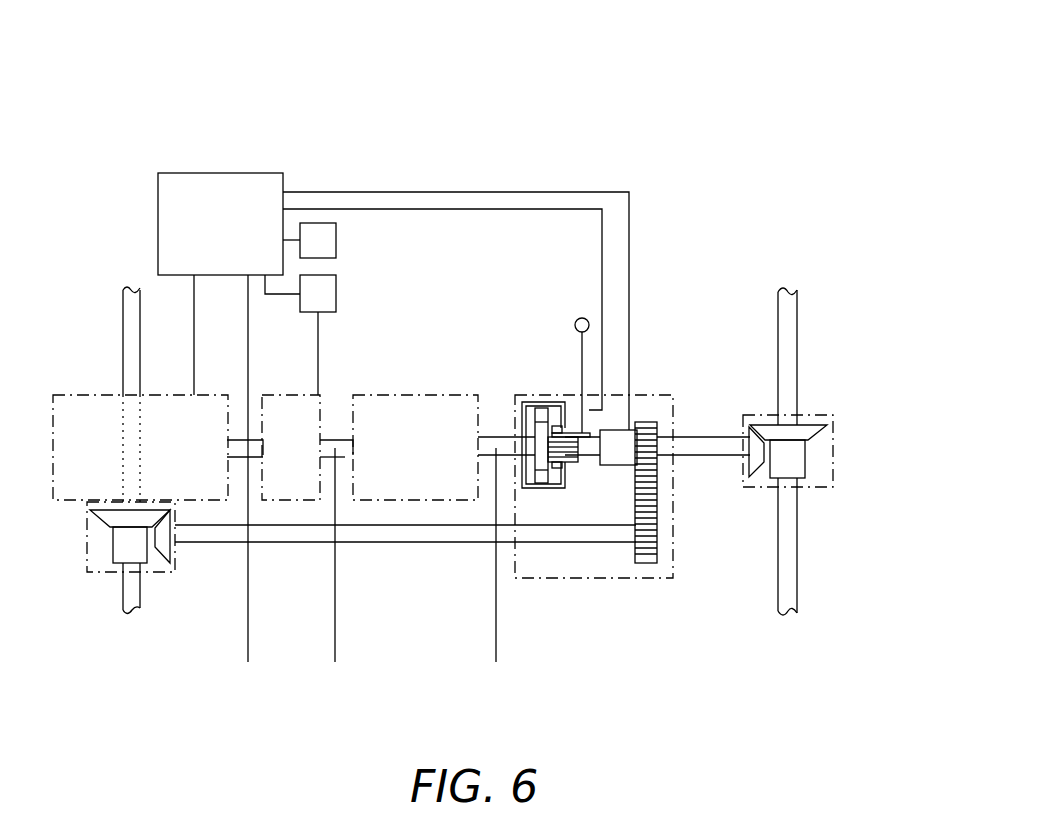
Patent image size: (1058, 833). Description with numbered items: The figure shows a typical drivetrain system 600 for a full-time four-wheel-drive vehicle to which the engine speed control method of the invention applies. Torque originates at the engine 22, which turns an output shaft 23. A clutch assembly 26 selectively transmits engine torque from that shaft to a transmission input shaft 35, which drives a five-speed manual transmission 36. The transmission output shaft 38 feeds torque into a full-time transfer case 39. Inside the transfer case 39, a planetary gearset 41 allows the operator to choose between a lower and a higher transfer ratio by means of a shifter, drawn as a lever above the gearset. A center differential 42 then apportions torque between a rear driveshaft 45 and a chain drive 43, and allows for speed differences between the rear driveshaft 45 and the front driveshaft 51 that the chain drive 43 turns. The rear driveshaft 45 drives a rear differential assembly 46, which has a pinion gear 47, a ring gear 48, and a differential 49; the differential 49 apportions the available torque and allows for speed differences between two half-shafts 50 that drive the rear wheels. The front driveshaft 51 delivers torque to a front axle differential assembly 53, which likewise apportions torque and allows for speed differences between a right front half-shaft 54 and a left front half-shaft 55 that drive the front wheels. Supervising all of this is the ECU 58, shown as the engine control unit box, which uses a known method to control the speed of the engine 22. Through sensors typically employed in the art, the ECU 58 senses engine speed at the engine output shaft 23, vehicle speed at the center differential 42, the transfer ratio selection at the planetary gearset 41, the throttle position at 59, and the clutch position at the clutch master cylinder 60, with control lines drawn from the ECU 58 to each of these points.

The drivetrain system 600 is at (499, 57).
The ECU 58 is at (393, 288).
The throttle position 59 is at (309, 240).
The clutch master cylinder 60 is at (300, 335).
The left front half-shaft 55 is at (114, 394).
The engine 22 is at (140, 447).
The output shaft 23 is at (245, 484).
The clutch assembly 26 is at (291, 447).
The transmission input shaft 35 is at (336, 566).
The five-speed manual transmission 36 is at (415, 447).
The transmission output shaft 38 is at (506, 565).
The full-time transfer case 39 is at (594, 471).
The planetary gearset 41 is at (561, 416).
The center differential 42 is at (618, 447).
The chain drive 43 is at (630, 492).
The rear driveshaft 45 is at (703, 459).
The rear differential assembly 46 is at (802, 465).
The pinion gear 47 is at (750, 438).
The ring gear 48 is at (768, 432).
The differential 49 is at (787, 459).
The half-shafts 50 is at (800, 473).
The front driveshaft 51 is at (405, 548).
The front axle differential assembly 53 is at (114, 537).
The right front half-shaft 54 is at (115, 588).